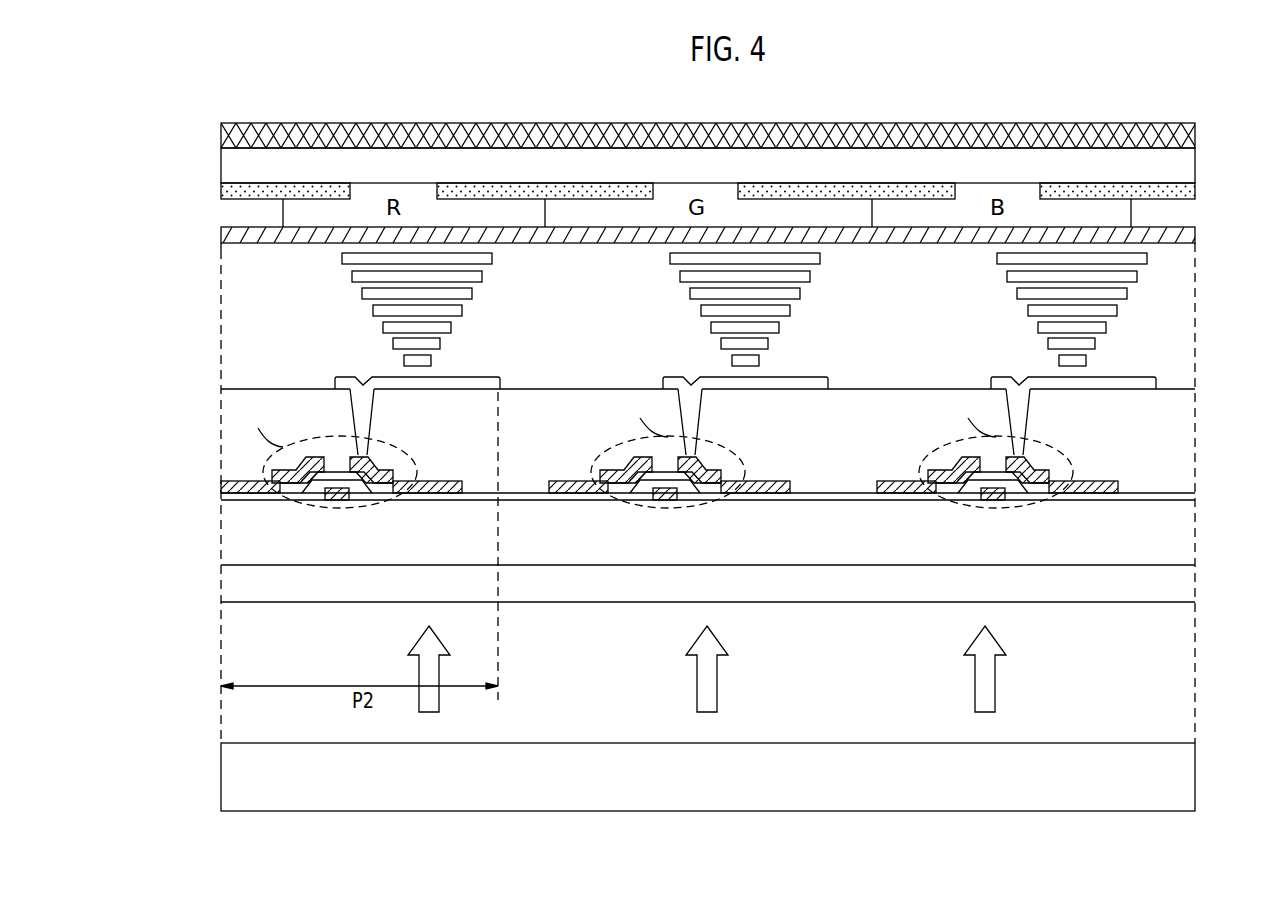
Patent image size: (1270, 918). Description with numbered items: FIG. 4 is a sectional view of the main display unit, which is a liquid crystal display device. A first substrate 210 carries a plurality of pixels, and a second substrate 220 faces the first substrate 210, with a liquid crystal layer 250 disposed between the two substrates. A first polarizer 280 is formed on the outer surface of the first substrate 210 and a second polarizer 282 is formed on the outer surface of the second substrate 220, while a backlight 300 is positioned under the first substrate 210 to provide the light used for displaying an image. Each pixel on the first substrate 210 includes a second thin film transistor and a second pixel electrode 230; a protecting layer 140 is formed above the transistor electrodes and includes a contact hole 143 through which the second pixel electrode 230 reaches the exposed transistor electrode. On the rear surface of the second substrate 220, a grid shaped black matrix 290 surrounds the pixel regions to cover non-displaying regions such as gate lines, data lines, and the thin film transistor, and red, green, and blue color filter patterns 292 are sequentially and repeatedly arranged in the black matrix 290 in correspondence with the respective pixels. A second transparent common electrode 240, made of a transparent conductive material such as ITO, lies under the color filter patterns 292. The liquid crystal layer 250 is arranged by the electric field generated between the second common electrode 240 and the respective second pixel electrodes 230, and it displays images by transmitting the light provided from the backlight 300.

The second polarizer 282 is at (1197, 131).
The second substrate 220 is at (1187, 165).
The black matrix 290 is at (224, 190).
The color filter patterns 292 is at (285, 214).
The second common electrode 240 is at (1188, 237).
The liquid crystal layer 250 is at (1187, 305).
The second pixel electrode 230 is at (478, 378).
The contact hole 143 is at (389, 414).
The protecting layer 140 is at (222, 408).
The first substrate 210 is at (1182, 543).
The first polarizer 280 is at (1182, 585).
The backlight 300 is at (1182, 773).